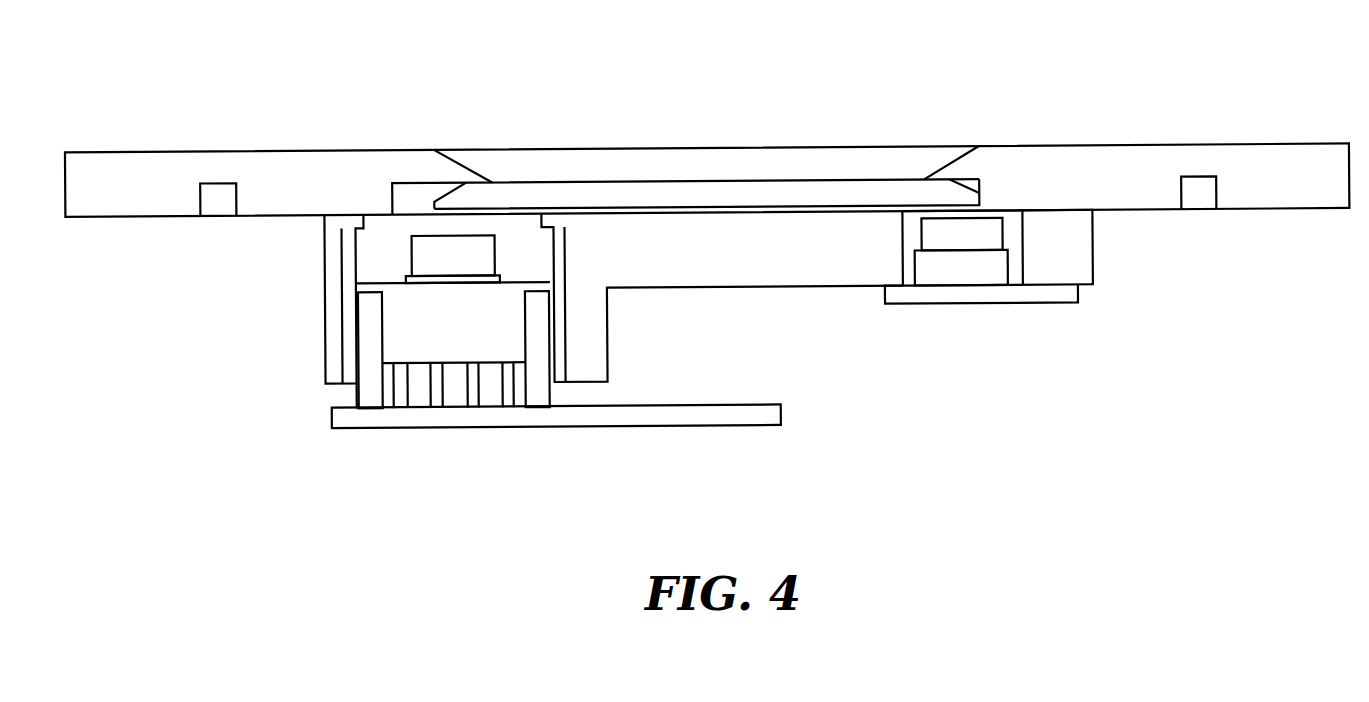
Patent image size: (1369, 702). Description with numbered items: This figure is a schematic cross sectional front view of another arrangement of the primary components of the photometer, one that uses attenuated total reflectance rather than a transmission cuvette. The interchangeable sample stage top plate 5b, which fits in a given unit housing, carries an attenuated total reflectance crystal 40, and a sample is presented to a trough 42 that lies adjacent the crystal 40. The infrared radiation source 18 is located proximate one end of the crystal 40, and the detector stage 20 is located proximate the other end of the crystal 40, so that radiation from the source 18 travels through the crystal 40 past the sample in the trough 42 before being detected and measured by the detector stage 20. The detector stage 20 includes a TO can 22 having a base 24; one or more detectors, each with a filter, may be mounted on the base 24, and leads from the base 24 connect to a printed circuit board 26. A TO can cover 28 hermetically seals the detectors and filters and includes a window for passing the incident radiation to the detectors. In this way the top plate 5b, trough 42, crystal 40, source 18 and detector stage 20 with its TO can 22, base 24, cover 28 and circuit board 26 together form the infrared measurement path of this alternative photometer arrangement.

The sample stage top plate 5b is at (1113, 183).
The trough 42 is at (723, 168).
The attenuated total reflectance (ATR) crystal 40 is at (853, 196).
The TO can 22 is at (377, 248).
The TO can cover 28 is at (457, 255).
The detector stage 20 is at (500, 249).
The base 24 is at (465, 337).
The printed circuit board 26 is at (583, 414).
The infrared radiation source 18 is at (973, 269).